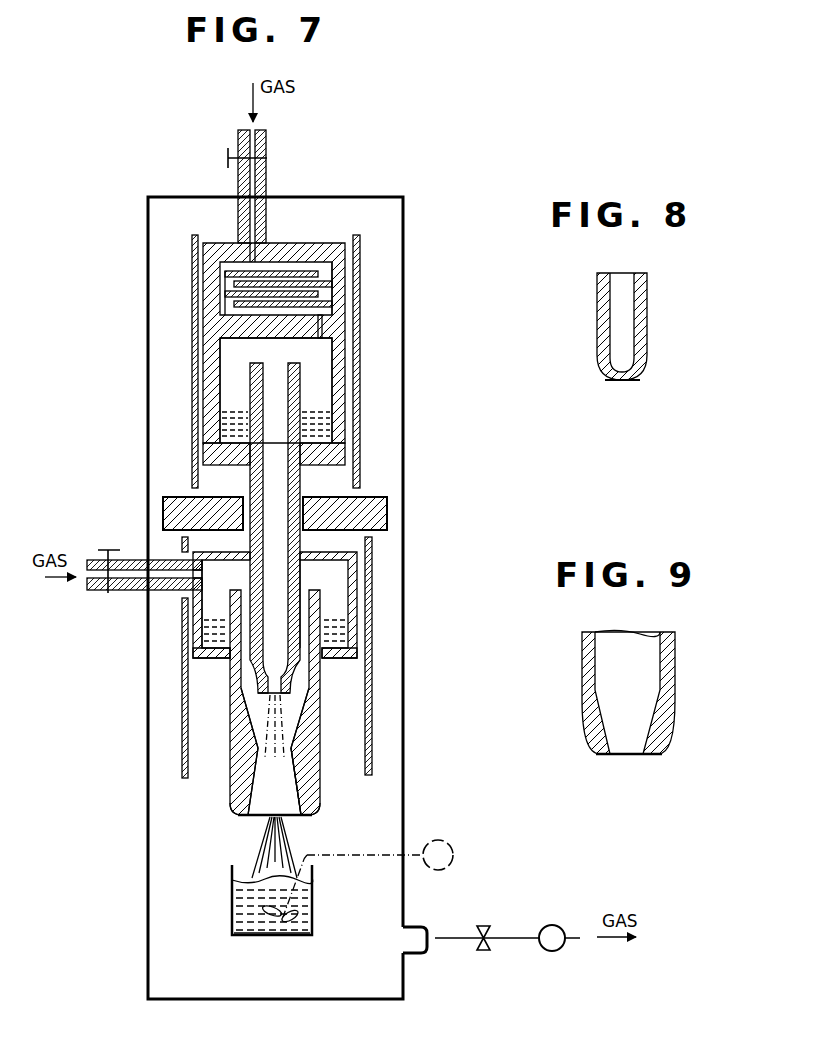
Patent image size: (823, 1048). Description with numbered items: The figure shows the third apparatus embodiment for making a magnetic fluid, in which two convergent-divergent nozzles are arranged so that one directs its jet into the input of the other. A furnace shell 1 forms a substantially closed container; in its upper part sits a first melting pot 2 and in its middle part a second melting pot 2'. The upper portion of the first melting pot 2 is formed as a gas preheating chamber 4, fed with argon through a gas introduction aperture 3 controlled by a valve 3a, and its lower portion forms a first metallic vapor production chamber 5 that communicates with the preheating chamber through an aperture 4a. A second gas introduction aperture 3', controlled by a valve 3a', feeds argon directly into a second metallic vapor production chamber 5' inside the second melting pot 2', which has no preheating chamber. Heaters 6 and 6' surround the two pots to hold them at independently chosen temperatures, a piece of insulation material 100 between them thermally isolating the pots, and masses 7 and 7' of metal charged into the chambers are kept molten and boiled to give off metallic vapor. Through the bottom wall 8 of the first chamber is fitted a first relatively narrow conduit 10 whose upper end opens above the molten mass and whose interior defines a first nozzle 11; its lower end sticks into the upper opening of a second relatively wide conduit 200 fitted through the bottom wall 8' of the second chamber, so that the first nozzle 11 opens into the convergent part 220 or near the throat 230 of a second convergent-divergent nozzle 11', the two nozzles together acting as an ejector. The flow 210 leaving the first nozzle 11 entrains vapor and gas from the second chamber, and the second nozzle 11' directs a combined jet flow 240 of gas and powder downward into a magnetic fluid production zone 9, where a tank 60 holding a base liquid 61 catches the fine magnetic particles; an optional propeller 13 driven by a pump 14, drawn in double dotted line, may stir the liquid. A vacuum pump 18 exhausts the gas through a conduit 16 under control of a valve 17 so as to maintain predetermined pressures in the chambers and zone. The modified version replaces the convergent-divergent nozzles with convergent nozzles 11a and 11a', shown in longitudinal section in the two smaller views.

In FIG. 7, the furnace shell 1 is at (404, 222).
In FIG. 7, the first melting pot 2 is at (294, 343).
In FIG. 7, the gas introduction aperture 3 is at (265, 196).
In FIG. 7, the valve 3a is at (229, 148).
In FIG. 7, the gas preheating chamber 4 is at (328, 293).
In FIG. 7, the aperture 4a is at (323, 322).
In FIG. 7, the first metallic vapor production chamber 5 is at (303, 390).
In FIG. 7, the heater 6 is at (271, 361).
In FIG. 7, the mass of metal 7 is at (304, 421).
In FIG. 7, the bottom wall 8 is at (274, 469).
In FIG. 7, the magnetic fluid production zone 9 is at (180, 847).
In FIG. 7, the first conduit 10 is at (255, 378).
In FIG. 8, the first conduit 10 is at (598, 317).
In FIG. 7, the first nozzle 11 is at (246, 716).
In FIG. 8, the convergent nozzle 11a is at (645, 392).
In FIG. 7, the propeller 13 is at (303, 908).
In FIG. 7, the pump 14 is at (438, 840).
In FIG. 7, the conduit 16 is at (450, 935).
In FIG. 7, the valve 17 is at (483, 925).
In FIG. 7, the vacuum pump 18 is at (552, 925).
In FIG. 7, the tank 60 is at (302, 937).
In FIG. 7, the base liquid 61 is at (248, 927).
In FIG. 7, the insulation material 100 is at (378, 497).
In FIG. 7, the outer crucible 200 is at (210, 633).
In FIG. 9, the outer crucible 200 is at (588, 655).
In FIG. 7, the flow 210 is at (262, 722).
In FIG. 7, the convergent part 220 is at (290, 708).
In FIG. 7, the throat 230 is at (303, 753).
In FIG. 7, the combined jet flow 240 is at (290, 845).
In FIG. 7, the gas introduction aperture 3' is at (144, 558).
In FIG. 7, the valve 3a' is at (103, 550).
In FIG. 7, the second melting pot 2' is at (295, 603).
In FIG. 7, the second metallic vapor production chamber 5' is at (300, 604).
In FIG. 7, the heater 6' is at (278, 657).
In FIG. 7, the mass of metal 7' is at (301, 636).
In FIG. 7, the bottom wall 8' is at (275, 673).
In FIG. 7, the second nozzle 11' is at (258, 801).
In FIG. 9, the convergent nozzle 11a' is at (658, 767).